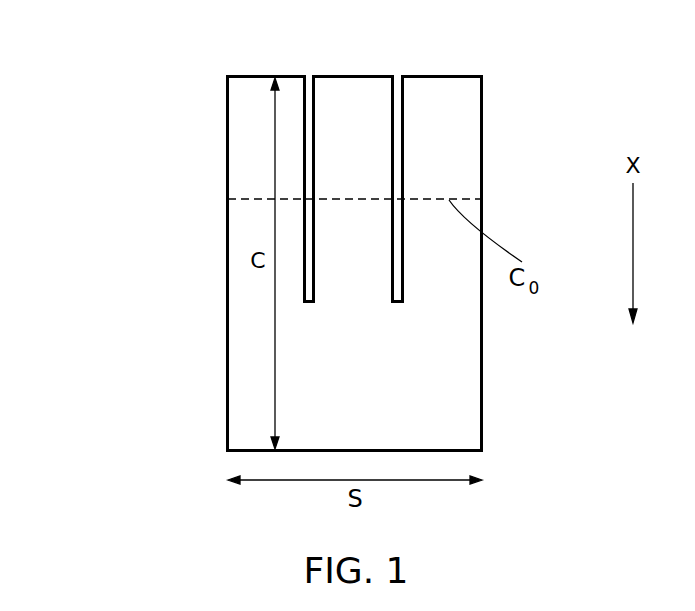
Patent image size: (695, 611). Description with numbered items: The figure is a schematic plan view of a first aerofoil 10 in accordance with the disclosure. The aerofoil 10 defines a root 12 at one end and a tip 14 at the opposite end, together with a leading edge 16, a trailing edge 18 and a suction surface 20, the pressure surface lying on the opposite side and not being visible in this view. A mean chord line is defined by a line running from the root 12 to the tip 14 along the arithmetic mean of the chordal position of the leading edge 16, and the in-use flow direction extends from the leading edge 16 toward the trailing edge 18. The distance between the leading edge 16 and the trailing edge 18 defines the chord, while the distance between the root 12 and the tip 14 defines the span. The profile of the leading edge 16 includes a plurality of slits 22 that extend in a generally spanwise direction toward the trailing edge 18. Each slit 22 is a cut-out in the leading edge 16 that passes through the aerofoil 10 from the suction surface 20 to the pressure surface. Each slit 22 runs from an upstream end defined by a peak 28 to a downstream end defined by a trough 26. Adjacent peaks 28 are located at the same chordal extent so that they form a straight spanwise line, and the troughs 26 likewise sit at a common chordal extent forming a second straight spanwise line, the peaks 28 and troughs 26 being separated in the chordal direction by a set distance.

The first aerofoil 10 is at (104, 266).
The root 12 is at (227, 390).
The tip 14 is at (482, 405).
The leading edge 16 is at (436, 75).
The trailing edge 18 is at (427, 452).
The suction surface 20 is at (242, 325).
The slit 22 is at (402, 153).
The trough 26 is at (404, 303).
The peak 28 is at (248, 75).